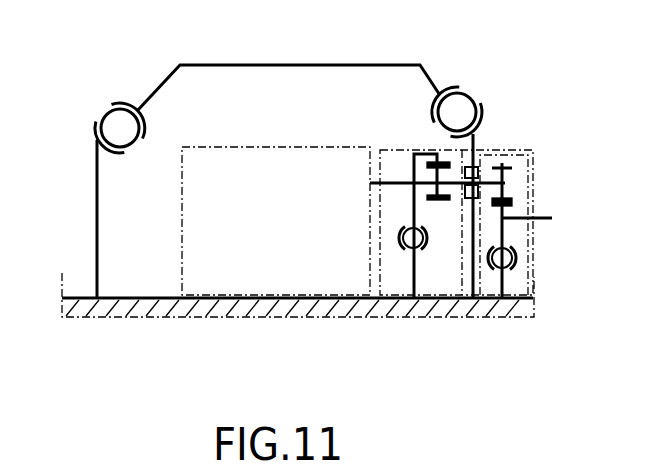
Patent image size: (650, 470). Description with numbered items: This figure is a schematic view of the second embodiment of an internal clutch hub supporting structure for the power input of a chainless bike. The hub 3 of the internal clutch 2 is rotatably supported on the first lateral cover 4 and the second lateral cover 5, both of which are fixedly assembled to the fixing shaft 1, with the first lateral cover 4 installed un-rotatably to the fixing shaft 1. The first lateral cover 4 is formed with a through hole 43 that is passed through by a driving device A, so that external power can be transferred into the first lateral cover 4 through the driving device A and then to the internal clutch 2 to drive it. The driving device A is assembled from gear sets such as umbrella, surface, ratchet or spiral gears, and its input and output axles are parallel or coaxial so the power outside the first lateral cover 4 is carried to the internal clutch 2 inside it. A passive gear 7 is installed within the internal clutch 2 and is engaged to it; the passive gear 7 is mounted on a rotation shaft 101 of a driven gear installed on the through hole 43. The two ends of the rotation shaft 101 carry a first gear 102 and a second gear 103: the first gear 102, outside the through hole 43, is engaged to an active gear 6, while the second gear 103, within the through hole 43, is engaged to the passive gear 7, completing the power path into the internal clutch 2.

The fixing shaft 1 is at (160, 297).
The internal clutch 2 is at (243, 142).
The hub 3 is at (250, 65).
The first lateral cover 4 is at (477, 257).
The second lateral cover 5 is at (95, 205).
The active gear 6 is at (512, 223).
The passive gear 7 is at (432, 157).
The through hole 43 is at (475, 172).
The rotation shaft 101 is at (485, 180).
The first gear 102 is at (508, 172).
The second gear 103 is at (433, 198).
The driving device A is at (530, 185).